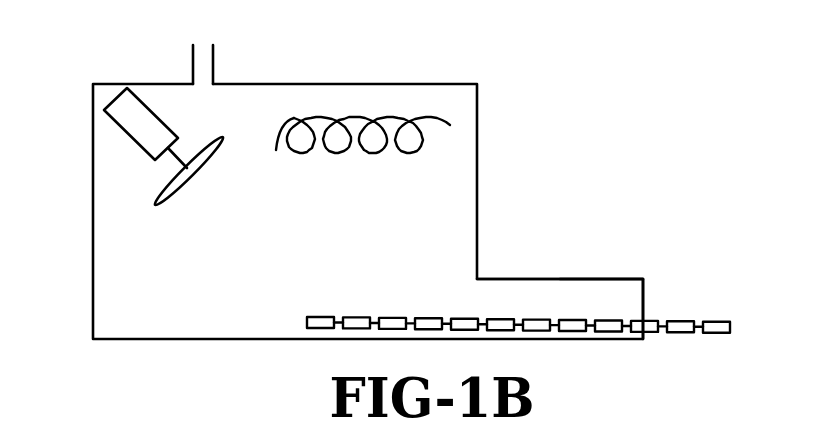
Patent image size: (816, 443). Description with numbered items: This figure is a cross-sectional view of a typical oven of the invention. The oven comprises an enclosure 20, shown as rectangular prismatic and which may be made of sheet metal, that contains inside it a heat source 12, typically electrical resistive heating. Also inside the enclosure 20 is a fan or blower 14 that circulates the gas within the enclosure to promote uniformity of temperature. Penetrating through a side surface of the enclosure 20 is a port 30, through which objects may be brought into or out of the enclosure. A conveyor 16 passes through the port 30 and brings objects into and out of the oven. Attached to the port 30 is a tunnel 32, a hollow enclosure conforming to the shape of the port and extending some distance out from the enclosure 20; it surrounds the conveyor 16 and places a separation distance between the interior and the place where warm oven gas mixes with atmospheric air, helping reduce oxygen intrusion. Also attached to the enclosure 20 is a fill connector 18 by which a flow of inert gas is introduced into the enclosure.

The heat source 12 is at (338, 108).
The fan or blower 14 is at (158, 197).
The conveyor 16 is at (717, 321).
The fill connector 18 is at (203, 62).
The enclosure 20 is at (432, 85).
The port 30 is at (480, 277).
The tunnel 32 is at (565, 279).